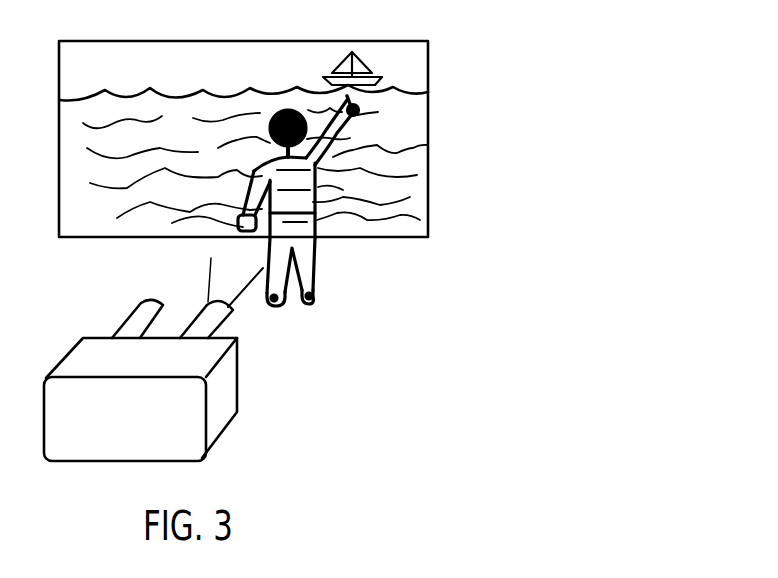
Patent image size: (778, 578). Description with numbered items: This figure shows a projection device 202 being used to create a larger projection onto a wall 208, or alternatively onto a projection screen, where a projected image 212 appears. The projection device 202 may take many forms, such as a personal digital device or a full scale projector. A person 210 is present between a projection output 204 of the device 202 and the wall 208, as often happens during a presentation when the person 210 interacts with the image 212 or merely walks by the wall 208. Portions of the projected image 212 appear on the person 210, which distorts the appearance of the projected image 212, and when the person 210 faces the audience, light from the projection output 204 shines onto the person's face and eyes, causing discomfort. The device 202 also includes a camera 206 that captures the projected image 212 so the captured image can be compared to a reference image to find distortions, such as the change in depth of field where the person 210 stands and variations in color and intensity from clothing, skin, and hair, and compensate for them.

The projection device 202 is at (227, 420).
The projection output 204 is at (225, 313).
The camera 206 is at (128, 315).
The wall 208 is at (429, 80).
The person 210 is at (317, 262).
The projected image 212 is at (161, 69).